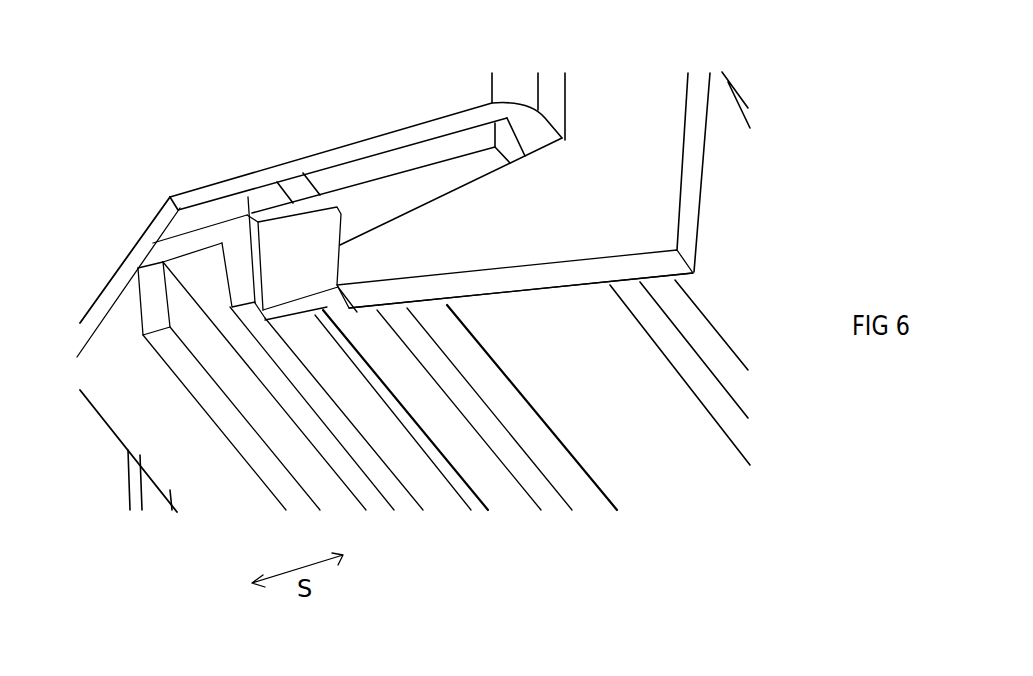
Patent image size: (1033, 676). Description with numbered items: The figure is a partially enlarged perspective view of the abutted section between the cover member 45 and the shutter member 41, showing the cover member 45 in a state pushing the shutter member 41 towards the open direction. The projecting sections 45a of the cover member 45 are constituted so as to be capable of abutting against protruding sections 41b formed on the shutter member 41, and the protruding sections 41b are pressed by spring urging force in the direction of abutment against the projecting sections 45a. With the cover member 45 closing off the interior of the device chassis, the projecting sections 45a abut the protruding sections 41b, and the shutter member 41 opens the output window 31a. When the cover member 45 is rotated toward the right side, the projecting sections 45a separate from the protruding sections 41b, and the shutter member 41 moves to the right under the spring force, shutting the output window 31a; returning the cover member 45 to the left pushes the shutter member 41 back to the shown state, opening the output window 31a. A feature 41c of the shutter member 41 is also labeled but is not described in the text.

The shutter member 41 is at (201, 212).
The protruding section 41b is at (288, 243).
The groove 41c is at (198, 273).
The projecting section 45a is at (428, 248).
The cover member 45 is at (460, 166).
The output window 31a is at (505, 447).